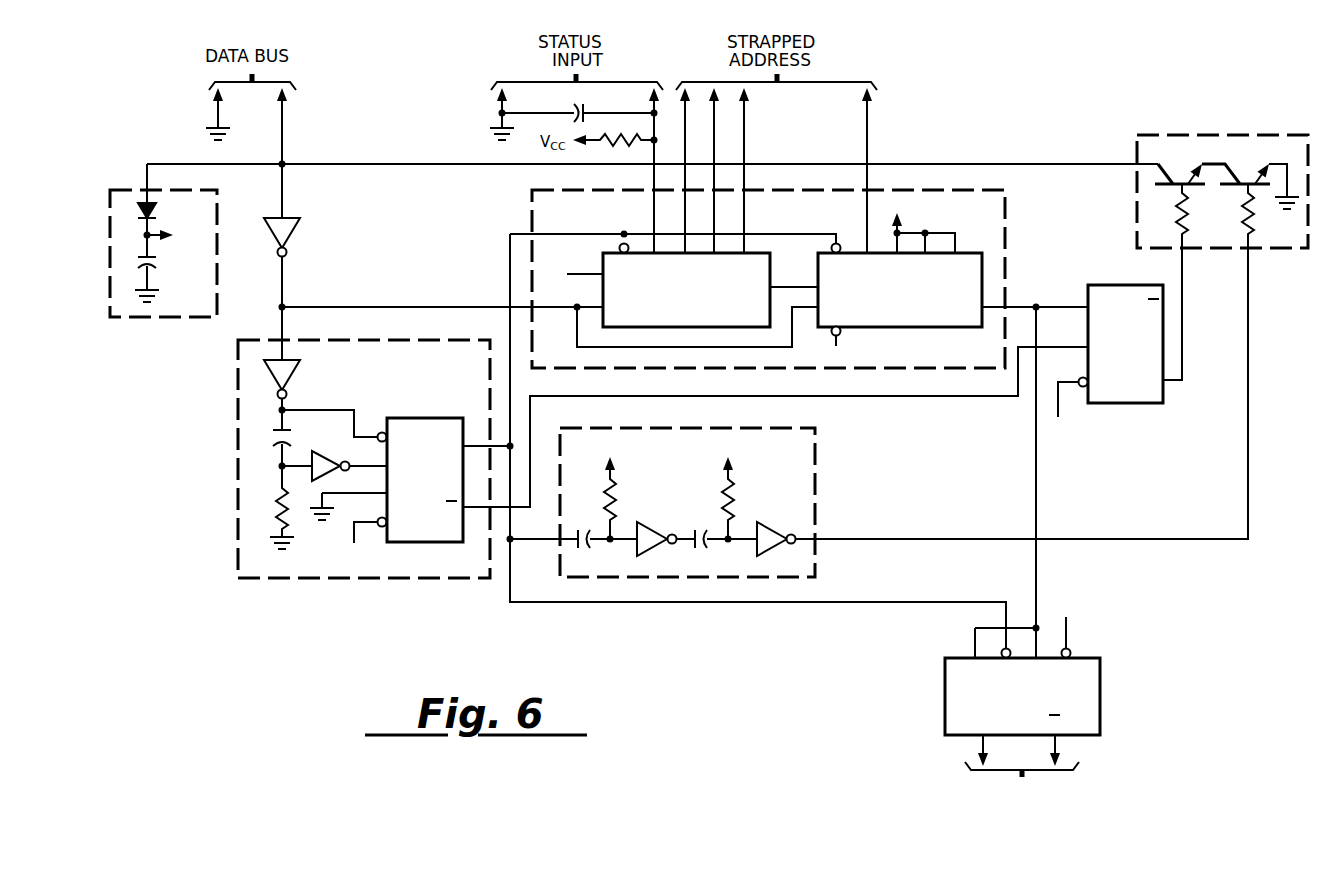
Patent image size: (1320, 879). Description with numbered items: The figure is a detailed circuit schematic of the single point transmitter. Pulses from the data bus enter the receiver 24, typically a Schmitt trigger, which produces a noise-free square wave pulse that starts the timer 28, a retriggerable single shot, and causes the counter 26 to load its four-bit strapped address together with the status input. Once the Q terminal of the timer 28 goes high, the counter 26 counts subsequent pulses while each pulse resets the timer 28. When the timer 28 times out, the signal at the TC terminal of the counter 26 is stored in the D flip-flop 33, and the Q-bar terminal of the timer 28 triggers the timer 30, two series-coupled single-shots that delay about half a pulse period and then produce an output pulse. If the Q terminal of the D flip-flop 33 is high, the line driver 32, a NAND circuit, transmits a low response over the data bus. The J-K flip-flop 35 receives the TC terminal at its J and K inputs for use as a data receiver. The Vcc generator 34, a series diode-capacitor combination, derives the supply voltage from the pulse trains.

The receiver 24 is at (298, 222).
The counter 26 is at (532, 202).
The timer 28 is at (285, 578).
The timer 30 is at (815, 477).
The line driver 32 is at (1217, 135).
The D flip-flop 33 is at (1130, 403).
The Vcc generator 34 is at (163, 318).
The J-K flip-flop 35 is at (1100, 690).